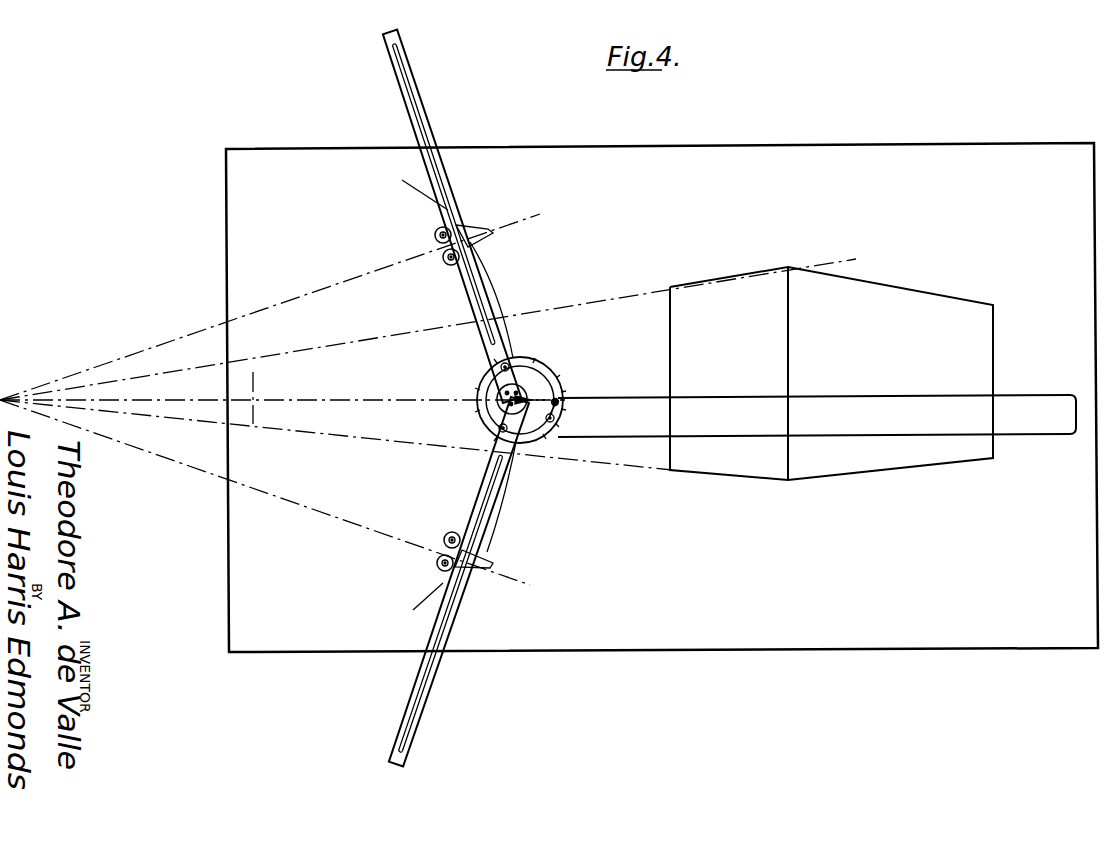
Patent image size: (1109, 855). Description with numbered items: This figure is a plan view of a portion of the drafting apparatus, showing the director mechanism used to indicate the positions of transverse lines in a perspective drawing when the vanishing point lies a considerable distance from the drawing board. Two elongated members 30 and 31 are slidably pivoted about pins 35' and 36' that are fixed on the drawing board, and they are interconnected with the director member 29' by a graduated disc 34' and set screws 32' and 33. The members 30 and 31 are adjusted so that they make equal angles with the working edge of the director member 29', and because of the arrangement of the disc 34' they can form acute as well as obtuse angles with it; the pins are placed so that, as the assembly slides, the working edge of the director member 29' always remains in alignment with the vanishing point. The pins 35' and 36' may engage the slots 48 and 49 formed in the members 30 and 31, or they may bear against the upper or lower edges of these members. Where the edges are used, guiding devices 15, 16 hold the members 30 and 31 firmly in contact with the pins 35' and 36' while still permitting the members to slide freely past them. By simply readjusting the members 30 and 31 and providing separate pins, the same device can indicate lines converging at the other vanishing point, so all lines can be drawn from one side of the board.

The slot 48 is at (404, 97).
The member 30 is at (443, 170).
The upper guide rollers 16 is at (434, 237).
The pin 35' is at (474, 269).
The set screw 32' is at (468, 359).
The graduated disc 34' is at (534, 392).
The set screw 33 is at (500, 428).
The director member 29' is at (817, 387).
The slot 49 is at (480, 502).
The member 31 is at (485, 526).
The guiding device 15 is at (437, 557).
The pin 36' is at (466, 523).